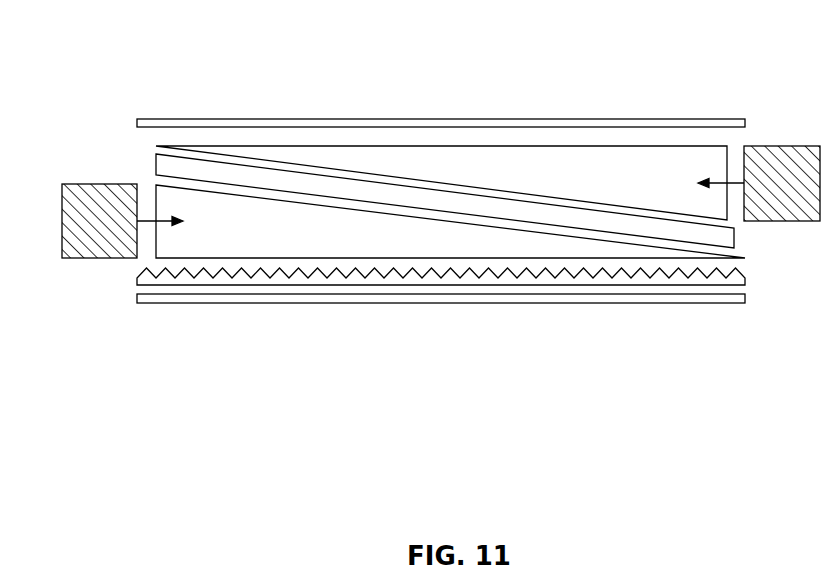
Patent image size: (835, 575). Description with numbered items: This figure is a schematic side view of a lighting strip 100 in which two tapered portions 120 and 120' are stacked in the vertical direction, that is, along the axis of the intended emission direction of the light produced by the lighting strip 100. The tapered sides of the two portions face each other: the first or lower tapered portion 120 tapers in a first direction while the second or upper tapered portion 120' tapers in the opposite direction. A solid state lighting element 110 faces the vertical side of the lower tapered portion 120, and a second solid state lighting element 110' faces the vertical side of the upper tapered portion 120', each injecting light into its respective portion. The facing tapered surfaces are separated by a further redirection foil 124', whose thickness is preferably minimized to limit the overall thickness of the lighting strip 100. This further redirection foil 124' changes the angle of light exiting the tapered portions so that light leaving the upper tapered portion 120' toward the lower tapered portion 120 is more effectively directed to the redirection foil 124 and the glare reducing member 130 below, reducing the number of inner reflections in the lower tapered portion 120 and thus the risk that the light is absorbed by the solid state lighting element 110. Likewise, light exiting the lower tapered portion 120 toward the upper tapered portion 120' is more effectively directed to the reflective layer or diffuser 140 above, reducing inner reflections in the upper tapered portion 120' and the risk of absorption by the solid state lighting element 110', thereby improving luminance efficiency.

The lighting strip 100 is at (480, 446).
The solid state lighting element 110 is at (759, 254).
The solid state lighting element 110' is at (110, 287).
The lower tapered portion 120 is at (450, 288).
The upper tapered portion 120' is at (441, 128).
The redirection foil 124 is at (441, 343).
The further redirection foil 124' is at (445, 268).
The glare reducing member 130 is at (172, 305).
The reflective layer or diffuser 140 is at (202, 118).